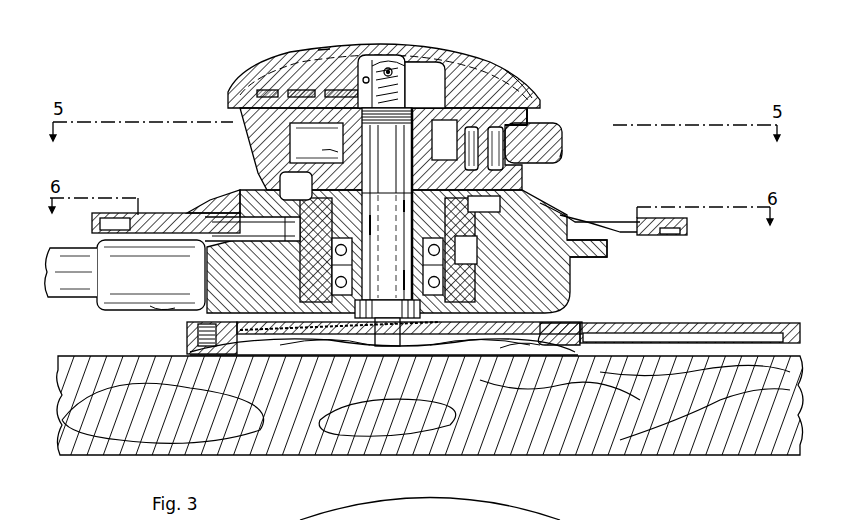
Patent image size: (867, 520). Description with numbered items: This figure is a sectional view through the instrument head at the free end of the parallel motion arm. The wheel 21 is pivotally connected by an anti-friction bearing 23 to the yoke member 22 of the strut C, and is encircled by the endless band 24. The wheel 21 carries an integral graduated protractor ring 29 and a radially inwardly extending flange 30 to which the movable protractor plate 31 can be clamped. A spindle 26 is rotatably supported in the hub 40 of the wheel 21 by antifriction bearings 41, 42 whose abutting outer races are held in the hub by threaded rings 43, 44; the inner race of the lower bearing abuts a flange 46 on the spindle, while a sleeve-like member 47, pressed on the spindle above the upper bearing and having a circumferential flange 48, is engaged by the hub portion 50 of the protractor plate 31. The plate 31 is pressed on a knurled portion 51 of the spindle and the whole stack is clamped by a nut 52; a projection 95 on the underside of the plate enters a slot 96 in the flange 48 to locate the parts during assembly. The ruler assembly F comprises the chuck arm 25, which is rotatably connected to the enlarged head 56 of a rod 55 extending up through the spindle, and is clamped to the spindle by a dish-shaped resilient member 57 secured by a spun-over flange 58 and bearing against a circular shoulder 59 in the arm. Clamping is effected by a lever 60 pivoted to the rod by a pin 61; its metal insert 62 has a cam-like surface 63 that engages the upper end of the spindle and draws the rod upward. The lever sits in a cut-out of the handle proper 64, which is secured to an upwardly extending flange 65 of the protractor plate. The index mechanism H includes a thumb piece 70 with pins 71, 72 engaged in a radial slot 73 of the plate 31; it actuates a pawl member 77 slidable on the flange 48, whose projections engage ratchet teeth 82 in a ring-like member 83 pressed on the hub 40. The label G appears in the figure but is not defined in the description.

The lever 60 is at (240, 92).
The metal insert 62 is at (278, 62).
The gear housing G is at (318, 48).
The hand grasp or handle proper 64 is at (535, 92).
The upwardly extending flange 65 is at (255, 150).
The anti-friction bearing 23 is at (406, 251).
The endless band 24 is at (575, 276).
The sleeve or ring-like member 83 is at (222, 210).
The face-type slots or ratchet teeth 82 is at (242, 186).
The radially inwardly extending flange 30 is at (565, 220).
The movable protractor element or plate 31 is at (625, 220).
The graduated protractor ring 29 is at (672, 218).
The index pawl releasing member or thumb piece 70 is at (560, 128).
The pin 71 is at (528, 124).
The pin 72 is at (530, 110).
The index mechanism H is at (560, 157).
The pin 61 is at (392, 53).
The cam-like surface 63 is at (420, 60).
The nut 52 is at (436, 96).
The hub portion 50 is at (345, 152).
The slot 96 is at (325, 152).
The projection 95 is at (296, 186).
The knurled portion 51 is at (445, 140).
The radial slot 73 is at (500, 170).
The circumferential flange 48 is at (484, 199).
The threaded ring 43 is at (447, 244).
The spindle 26 is at (387, 204).
The indexer or pawl member 77 is at (406, 205).
The sleeve-like member 47 is at (370, 225).
The antifriction bearing 41 is at (406, 280).
The antifriction bearing 42 is at (387, 322).
The hub 40 is at (310, 352).
The wheel 21 is at (200, 270).
The yoke member 22 is at (160, 308).
The strut C is at (70, 247).
The circular shoulder 59 is at (560, 322).
The instrument holding member or ruler chuck arm 25 is at (677, 315).
The dish-shaped resilient member 57 is at (250, 355).
The flange 46 is at (385, 350).
The enlarged head 56 is at (350, 350).
The pin or rod 55 is at (420, 350).
The flange 58 is at (450, 350).
The threaded ring 44 is at (505, 352).
The instrument or ruler assembly F is at (563, 350).